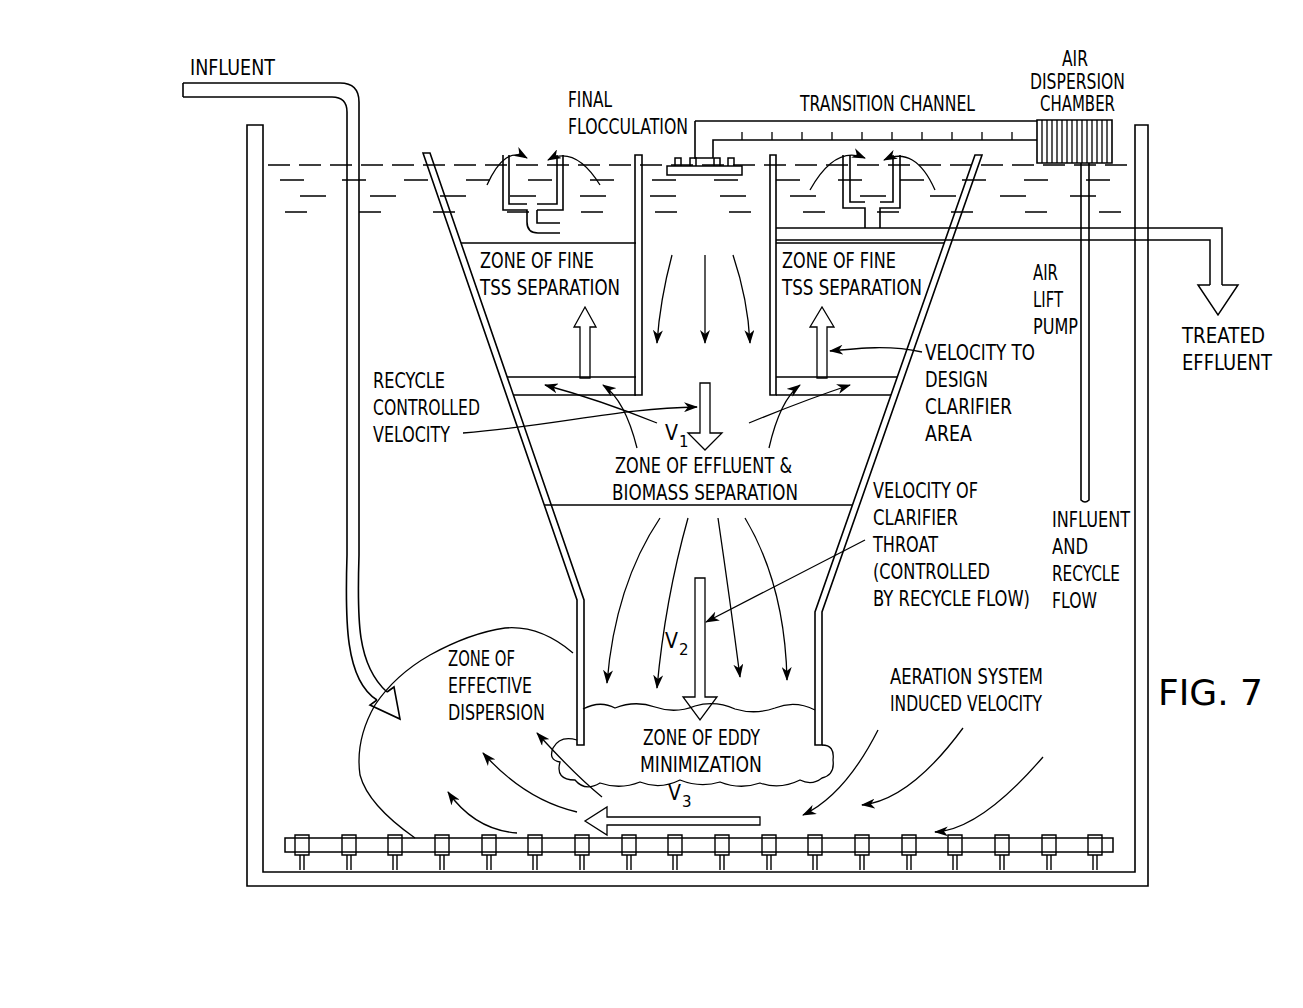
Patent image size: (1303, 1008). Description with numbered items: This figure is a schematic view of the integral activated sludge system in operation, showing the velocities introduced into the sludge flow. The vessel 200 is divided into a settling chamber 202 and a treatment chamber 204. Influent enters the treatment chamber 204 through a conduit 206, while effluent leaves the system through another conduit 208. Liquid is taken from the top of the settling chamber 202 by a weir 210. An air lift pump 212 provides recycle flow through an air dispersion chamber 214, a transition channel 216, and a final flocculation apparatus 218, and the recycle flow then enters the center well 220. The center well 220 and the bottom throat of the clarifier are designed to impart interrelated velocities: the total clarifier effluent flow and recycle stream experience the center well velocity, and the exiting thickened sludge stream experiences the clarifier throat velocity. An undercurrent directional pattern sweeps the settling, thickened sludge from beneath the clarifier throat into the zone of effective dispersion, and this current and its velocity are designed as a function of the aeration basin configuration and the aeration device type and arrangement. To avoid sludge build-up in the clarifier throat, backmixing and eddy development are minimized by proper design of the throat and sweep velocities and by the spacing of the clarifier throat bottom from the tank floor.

The vessel 200 is at (1148, 482).
The settling chamber 202 is at (612, 542).
The treatment chamber 204 is at (1040, 644).
The conduit 206 is at (360, 116).
The conduit 208 is at (1160, 228).
The weir 210 is at (503, 190).
The air lift pump 212 is at (1090, 443).
The air dispersion chamber 214 is at (1113, 122).
The transition channel 216 is at (993, 127).
The final flocculation apparatus 218 is at (712, 178).
The center well 220 is at (775, 158).